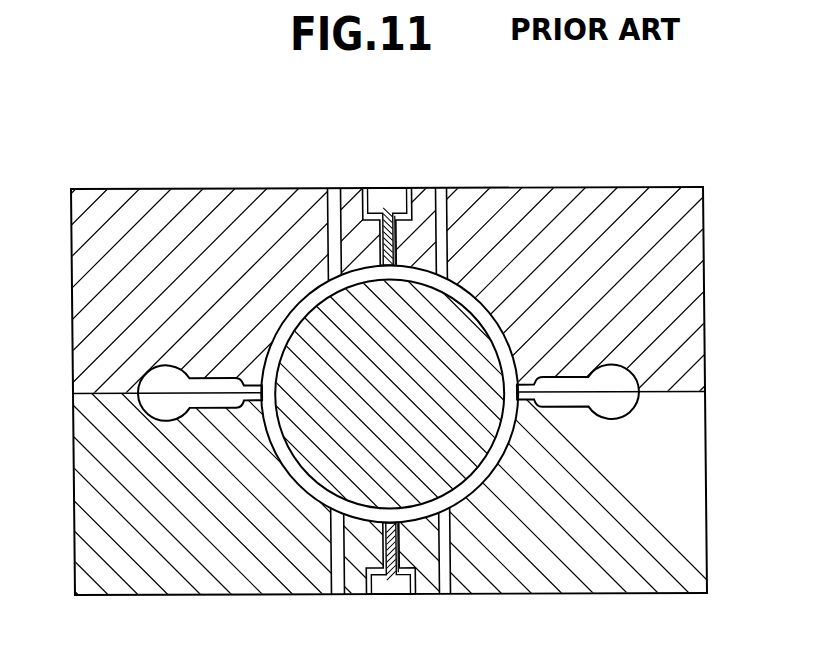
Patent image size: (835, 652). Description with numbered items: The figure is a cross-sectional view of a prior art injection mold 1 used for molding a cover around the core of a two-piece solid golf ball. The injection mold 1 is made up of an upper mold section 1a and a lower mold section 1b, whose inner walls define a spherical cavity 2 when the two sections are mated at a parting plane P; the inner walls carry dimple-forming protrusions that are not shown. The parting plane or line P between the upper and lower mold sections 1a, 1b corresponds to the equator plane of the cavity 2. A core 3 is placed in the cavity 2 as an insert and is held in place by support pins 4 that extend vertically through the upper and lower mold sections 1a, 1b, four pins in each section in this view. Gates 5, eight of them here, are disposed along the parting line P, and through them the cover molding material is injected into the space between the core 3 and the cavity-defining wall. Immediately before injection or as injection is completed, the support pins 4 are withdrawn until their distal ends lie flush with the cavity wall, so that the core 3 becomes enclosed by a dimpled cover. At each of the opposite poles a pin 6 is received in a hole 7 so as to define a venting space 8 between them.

The injection mold 1 is at (645, 174).
The upper mold section 1a is at (690, 305).
The lower mold section 1b is at (692, 508).
The spherical cavity 2 is at (475, 297).
The core 3 is at (323, 307).
The support pins 4 is at (340, 196).
The gates 5 is at (252, 380).
The pin 6 is at (389, 196).
The hole 7 is at (375, 196).
The venting space 8 is at (408, 196).
The parting plane P is at (108, 396).